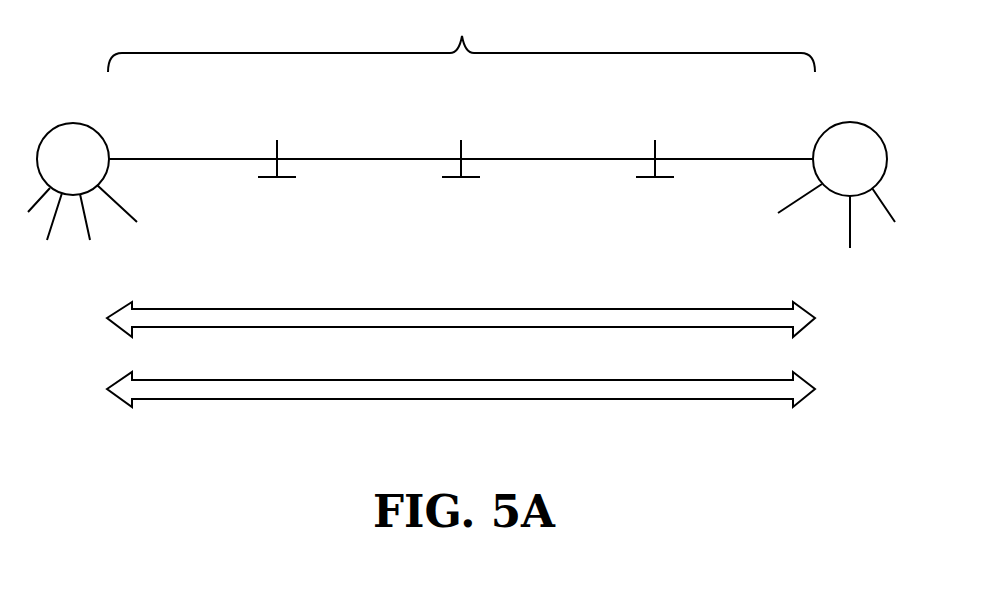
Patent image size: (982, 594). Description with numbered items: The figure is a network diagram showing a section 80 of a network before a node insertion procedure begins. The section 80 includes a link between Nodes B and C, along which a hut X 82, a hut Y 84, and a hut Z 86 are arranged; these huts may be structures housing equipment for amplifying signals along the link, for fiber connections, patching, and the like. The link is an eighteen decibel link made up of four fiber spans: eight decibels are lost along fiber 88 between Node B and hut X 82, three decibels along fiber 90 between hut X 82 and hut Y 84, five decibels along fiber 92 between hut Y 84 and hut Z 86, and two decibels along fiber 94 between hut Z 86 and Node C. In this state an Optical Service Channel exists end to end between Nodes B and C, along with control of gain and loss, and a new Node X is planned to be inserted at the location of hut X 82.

The section 80 is at (177, 478).
The hut X 82 is at (283, 180).
The hut Y 84 is at (468, 180).
The hut Z 86 is at (663, 180).
The fiber 88 is at (195, 161).
The fiber 90 is at (382, 161).
The fiber 92 is at (578, 161).
The fiber 94 is at (737, 161).